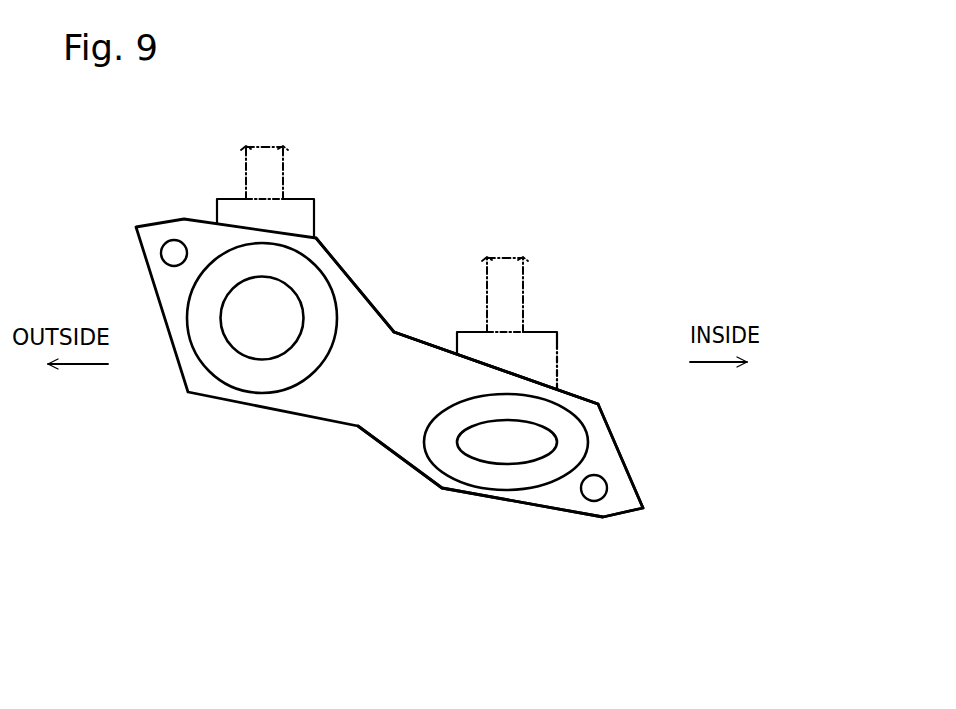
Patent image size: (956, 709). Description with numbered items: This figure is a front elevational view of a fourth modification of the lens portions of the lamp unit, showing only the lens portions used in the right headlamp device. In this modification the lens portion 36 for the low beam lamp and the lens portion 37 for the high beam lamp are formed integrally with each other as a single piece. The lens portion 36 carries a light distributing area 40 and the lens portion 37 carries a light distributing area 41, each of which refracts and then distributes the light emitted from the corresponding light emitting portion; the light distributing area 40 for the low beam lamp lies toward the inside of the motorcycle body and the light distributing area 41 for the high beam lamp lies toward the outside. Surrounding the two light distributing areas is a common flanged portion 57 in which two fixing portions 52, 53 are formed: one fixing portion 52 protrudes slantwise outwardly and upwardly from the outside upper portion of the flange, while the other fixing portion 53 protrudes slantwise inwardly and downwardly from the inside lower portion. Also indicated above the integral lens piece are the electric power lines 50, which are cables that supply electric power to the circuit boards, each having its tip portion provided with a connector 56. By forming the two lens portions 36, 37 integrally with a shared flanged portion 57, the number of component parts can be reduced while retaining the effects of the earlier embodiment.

The lens portion 36 is at (489, 504).
The lens portion 37 is at (236, 409).
The light distributing area 40 is at (556, 422).
The light distributing area 41 is at (303, 277).
The electric power line 50 is at (287, 161).
The fixing portion 52 is at (157, 228).
The fixing portion 53 is at (615, 502).
The connector 56 is at (296, 203).
The common flanged portion 57 is at (408, 346).